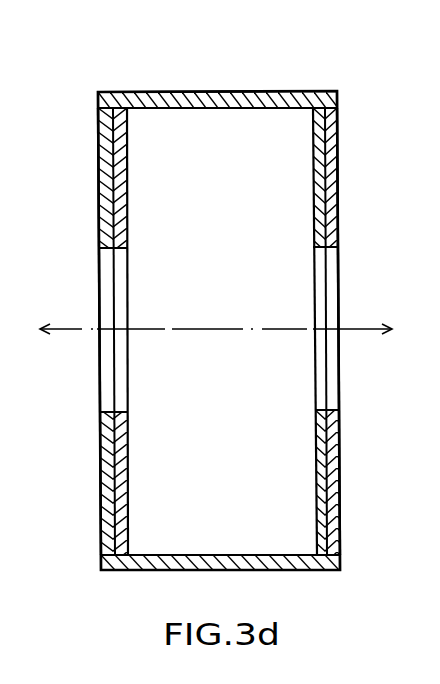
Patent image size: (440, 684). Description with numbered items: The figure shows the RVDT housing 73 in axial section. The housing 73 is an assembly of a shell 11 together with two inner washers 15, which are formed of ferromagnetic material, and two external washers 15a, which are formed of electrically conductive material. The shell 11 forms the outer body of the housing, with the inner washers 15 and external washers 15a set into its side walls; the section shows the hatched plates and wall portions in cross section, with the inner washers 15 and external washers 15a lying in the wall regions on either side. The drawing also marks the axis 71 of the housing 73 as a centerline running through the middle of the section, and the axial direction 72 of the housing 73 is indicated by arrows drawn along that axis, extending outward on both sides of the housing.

The shell 11 is at (278, 92).
The inner washer 15 is at (101, 193).
The external washer 15a is at (100, 238).
The axis 71 is at (81, 325).
The axial direction 72 is at (46, 327).
The RVDT housing 73 is at (73, 118).